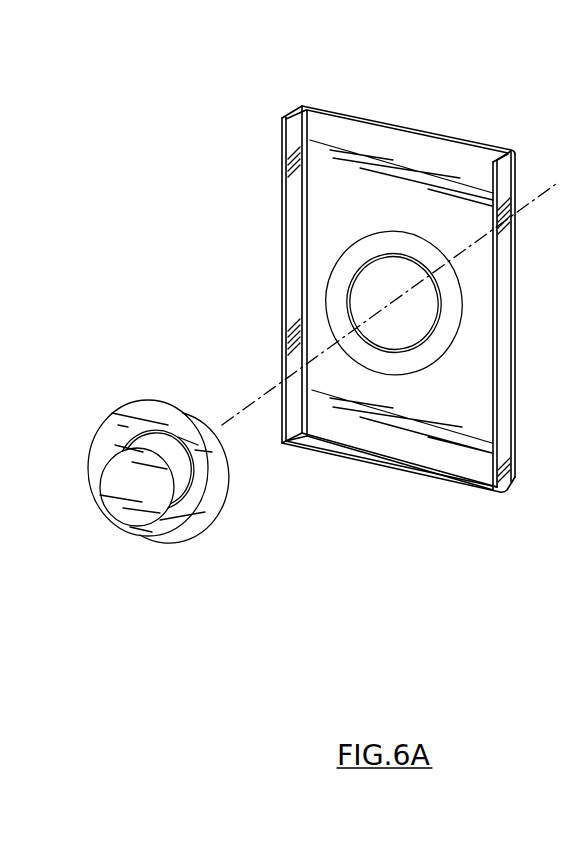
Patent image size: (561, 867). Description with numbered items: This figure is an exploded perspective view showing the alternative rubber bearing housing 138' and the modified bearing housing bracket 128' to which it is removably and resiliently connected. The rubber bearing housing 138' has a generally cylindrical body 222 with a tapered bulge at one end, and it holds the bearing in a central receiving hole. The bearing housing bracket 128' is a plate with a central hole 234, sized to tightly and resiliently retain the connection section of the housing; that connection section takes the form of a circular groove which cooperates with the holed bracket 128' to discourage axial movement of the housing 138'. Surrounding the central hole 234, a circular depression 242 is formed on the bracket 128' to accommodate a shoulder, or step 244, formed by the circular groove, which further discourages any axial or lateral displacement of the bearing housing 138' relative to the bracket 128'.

The modified bearing housing bracket 128' is at (398, 265).
The circular depression 242 is at (340, 263).
The central hole 234 is at (396, 272).
The rubber bearing housing 138' is at (142, 481).
The body 222 is at (197, 492).
The step 244 is at (224, 480).